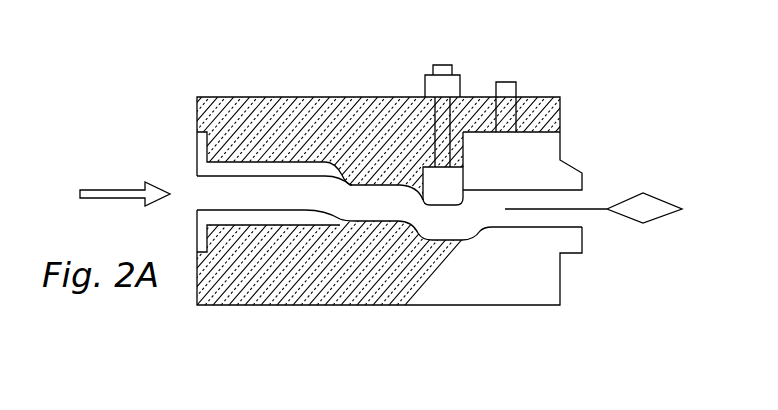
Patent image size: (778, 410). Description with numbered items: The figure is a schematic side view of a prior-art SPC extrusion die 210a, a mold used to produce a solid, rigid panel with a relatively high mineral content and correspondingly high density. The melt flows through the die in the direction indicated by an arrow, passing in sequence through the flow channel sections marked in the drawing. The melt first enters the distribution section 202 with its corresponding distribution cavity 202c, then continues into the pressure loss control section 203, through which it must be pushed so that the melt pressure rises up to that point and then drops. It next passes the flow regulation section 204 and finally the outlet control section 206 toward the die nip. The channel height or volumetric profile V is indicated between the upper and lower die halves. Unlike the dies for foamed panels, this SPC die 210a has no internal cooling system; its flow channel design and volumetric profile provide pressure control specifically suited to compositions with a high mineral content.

The die 210a is at (168, 80).
The distribution section 202 is at (335, 175).
The distribution cavity 202c is at (322, 219).
The pressure loss control section 203 is at (363, 203).
The flow regulation section 204 is at (445, 190).
The outlet control section 206 is at (537, 168).
The volumetric profile V is at (388, 202).